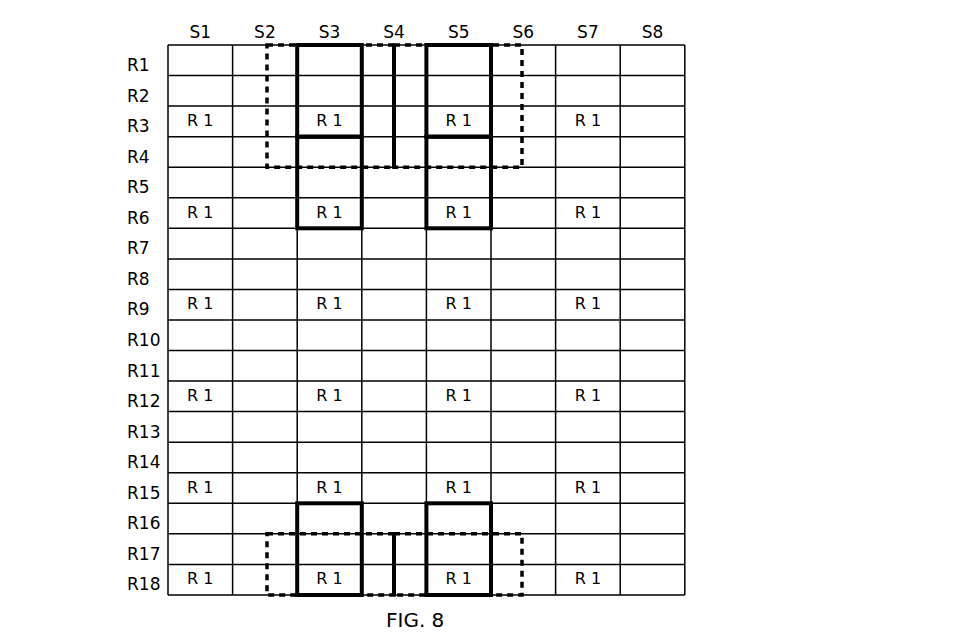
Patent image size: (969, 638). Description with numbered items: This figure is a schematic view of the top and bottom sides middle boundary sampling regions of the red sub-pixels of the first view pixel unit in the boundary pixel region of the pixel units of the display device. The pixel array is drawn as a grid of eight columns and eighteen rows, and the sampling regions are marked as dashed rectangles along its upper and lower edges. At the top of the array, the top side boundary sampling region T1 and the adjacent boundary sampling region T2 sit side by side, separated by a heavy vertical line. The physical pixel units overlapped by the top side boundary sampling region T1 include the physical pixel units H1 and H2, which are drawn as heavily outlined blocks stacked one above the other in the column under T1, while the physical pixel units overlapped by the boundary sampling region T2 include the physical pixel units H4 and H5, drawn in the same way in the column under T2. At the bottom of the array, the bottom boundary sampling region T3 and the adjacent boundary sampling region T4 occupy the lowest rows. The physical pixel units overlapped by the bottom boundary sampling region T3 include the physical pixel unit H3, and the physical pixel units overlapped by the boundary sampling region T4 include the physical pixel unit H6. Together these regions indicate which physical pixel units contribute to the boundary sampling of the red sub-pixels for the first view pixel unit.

The top side boundary sampling region T1 is at (267, 65).
The boundary sampling region T2 is at (521, 70).
The bottom boundary sampling region T3 is at (266, 580).
The boundary sampling region T4 is at (523, 580).
The physical pixel unit H1 is at (296, 118).
The physical pixel unit H2 is at (296, 215).
The physical pixel unit H3 is at (296, 520).
The physical pixel unit H4 is at (487, 112).
The physical pixel unit H5 is at (492, 216).
The physical pixel unit H6 is at (492, 520).